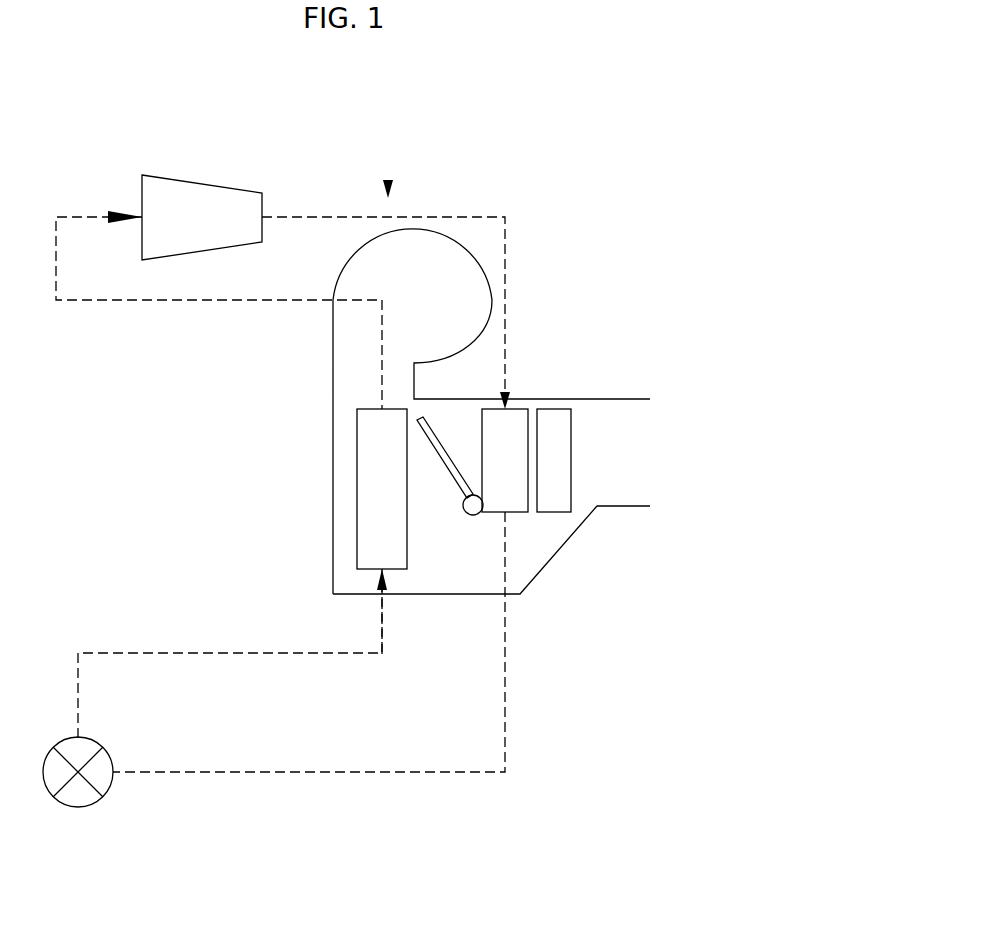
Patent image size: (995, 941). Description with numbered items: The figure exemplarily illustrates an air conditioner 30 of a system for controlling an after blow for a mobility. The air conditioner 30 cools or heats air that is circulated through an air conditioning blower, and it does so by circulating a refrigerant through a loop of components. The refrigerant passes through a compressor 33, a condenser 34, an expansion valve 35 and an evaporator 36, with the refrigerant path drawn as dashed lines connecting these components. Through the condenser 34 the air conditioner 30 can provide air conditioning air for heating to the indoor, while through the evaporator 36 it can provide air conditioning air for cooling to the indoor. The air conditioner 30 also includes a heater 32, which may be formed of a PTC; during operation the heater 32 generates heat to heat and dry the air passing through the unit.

The air conditioner 30 is at (388, 190).
The heater 32 is at (559, 415).
The compressor 33 is at (182, 183).
The condenser 34 is at (522, 504).
The expansion valve 35 is at (78, 808).
The evaporator 36 is at (370, 510).